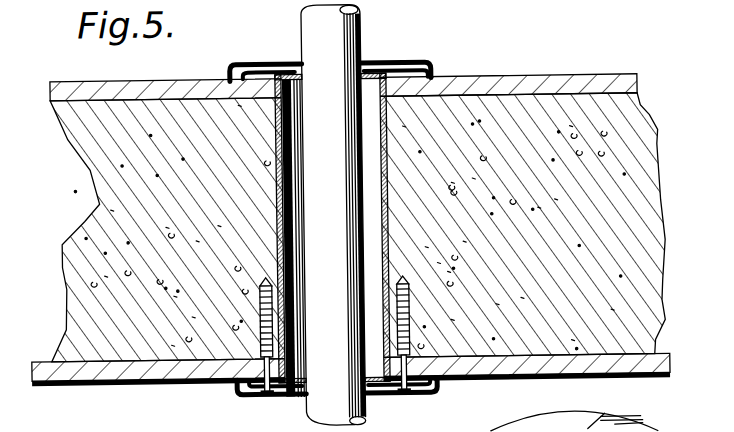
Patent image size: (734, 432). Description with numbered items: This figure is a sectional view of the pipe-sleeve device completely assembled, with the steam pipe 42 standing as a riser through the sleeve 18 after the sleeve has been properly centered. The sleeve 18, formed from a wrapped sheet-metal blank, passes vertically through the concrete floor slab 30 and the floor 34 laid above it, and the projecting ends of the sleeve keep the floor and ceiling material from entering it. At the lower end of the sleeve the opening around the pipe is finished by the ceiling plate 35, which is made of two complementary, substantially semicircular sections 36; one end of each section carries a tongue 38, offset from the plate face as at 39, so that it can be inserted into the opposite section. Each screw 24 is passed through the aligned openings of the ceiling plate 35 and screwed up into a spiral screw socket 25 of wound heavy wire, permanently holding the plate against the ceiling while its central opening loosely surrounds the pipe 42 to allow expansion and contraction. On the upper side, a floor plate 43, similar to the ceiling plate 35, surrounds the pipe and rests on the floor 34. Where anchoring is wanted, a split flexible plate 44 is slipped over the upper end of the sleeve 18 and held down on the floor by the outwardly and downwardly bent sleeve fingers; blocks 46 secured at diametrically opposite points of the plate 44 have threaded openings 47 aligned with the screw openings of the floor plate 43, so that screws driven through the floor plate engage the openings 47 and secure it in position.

The sleeve 18 is at (382, 140).
The screw 24 is at (263, 394).
The spiral screw socket 25 is at (437, 384).
The concrete floor slab 30 is at (607, 165).
The floor 34 is at (518, 78).
The ceiling plate 35 is at (446, 60).
The complementary section 36 is at (279, 63).
The tongue 38 is at (293, 404).
The offset 39 is at (351, 392).
The steam pipe 42 is at (323, 215).
The floor plate 43 is at (381, 61).
The plate 44 is at (533, 430).
The block 46 is at (640, 431).
The threaded opening 47 is at (614, 431).